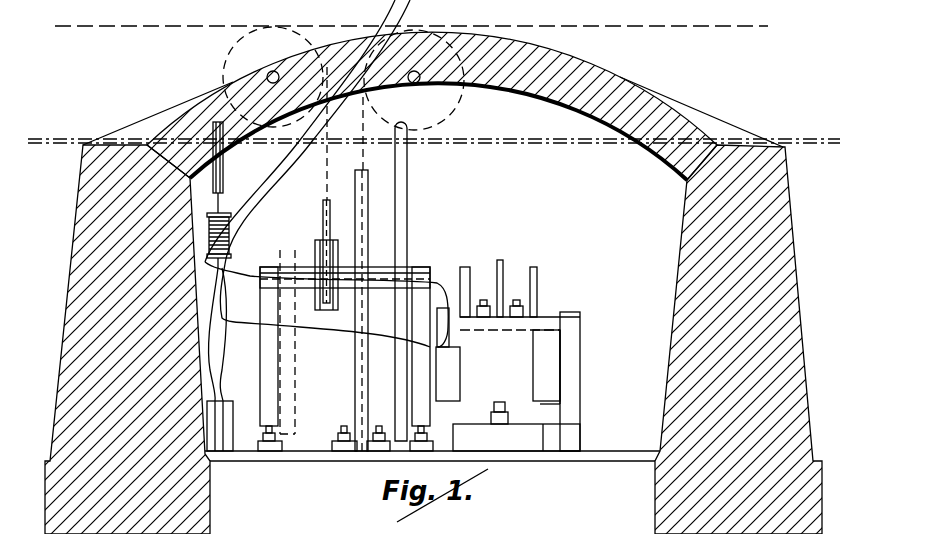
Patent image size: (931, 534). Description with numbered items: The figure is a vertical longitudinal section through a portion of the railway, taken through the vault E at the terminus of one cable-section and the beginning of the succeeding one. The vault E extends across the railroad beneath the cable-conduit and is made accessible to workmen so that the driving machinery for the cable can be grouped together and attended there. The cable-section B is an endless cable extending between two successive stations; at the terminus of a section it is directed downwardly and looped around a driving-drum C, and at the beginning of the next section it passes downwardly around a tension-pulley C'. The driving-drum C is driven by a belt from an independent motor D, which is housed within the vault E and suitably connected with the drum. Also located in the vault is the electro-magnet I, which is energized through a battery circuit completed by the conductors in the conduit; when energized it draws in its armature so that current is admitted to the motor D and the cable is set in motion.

The cable-section B is at (411, 132).
The driving-drum C is at (381, 274).
The tension-pulley C' is at (322, 215).
The motor D is at (508, 355).
The vault E is at (434, 280).
The electro-magnet I is at (223, 286).